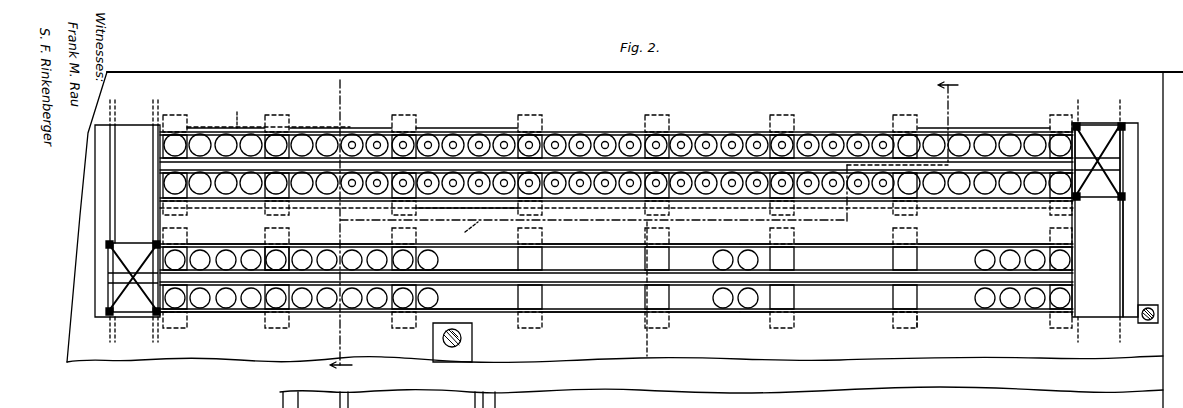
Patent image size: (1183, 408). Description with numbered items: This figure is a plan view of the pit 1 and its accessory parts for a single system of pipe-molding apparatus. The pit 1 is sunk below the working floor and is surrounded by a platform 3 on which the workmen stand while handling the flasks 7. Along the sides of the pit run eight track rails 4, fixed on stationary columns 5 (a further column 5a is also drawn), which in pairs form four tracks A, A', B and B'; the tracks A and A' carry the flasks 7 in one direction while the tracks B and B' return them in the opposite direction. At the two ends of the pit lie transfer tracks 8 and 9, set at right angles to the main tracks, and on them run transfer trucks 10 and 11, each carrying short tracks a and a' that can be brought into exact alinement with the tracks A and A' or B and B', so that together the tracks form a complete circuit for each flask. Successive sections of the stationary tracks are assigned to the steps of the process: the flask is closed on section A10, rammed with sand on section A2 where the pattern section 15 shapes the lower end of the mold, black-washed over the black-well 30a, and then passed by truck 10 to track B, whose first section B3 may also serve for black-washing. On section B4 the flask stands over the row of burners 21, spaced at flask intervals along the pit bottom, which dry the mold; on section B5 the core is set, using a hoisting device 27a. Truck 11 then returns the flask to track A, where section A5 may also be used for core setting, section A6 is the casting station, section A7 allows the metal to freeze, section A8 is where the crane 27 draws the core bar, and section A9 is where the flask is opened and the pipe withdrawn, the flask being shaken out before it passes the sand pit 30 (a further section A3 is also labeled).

The pit 1 is at (588, 165).
The platform 3 is at (270, 72).
The track rails 4 is at (645, 224).
The stationary columns 5 is at (430, 116).
The hanger shoe 5a is at (921, 276).
The flasks 7 is at (428, 134).
The transfer track 8 is at (158, 141).
The transfer track 9 is at (1120, 292).
The transfer truck 10 is at (138, 318).
The transfer truck 11 is at (1087, 197).
The pattern section 15 is at (267, 247).
The burners 21 is at (378, 143).
The crane 27 is at (442, 338).
The hoisting device 27a is at (1147, 322).
The sand pit 30 is at (523, 243).
The black-well 30a is at (210, 225).
The track A is at (617, 204).
The track A' is at (341, 293).
The track section A2 is at (1010, 328).
The chain section A3 is at (192, 314).
The track section A5 is at (1003, 244).
The track section A6 is at (868, 244).
The track section A7 is at (750, 244).
The track section A8 is at (692, 244).
The track section A9 is at (575, 244).
The track section A10 is at (467, 278).
The track B is at (467, 210).
The track B' is at (467, 112).
The track section B3 is at (220, 130).
The track section B4 is at (344, 130).
The track section B5 is at (998, 130).
The short track a is at (603, 246).
The short track a' is at (626, 194).